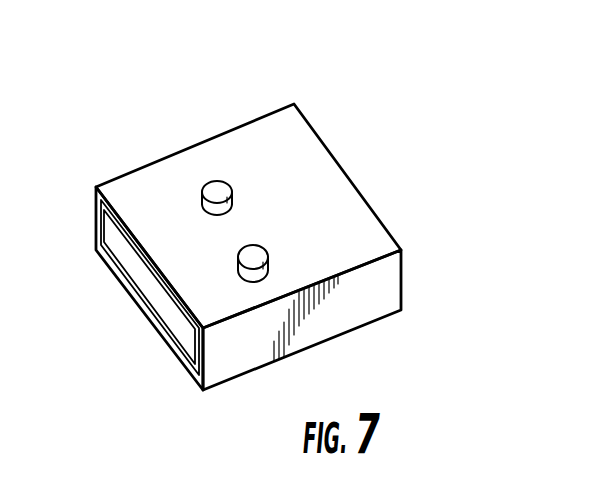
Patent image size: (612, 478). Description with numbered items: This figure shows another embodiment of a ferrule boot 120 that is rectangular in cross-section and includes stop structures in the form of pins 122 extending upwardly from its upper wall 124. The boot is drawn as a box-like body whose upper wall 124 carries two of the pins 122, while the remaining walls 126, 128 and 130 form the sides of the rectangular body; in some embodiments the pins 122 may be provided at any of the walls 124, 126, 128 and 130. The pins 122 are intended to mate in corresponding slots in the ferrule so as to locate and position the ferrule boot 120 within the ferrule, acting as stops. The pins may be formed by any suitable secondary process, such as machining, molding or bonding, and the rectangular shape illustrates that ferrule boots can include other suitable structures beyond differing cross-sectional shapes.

The ferrule boot 120 is at (440, 74).
The stop structures or pins 122 is at (218, 186).
The upper wall 124 is at (345, 230).
The wall 126 is at (142, 312).
The wall 128 is at (93, 213).
The wall 130 is at (358, 300).